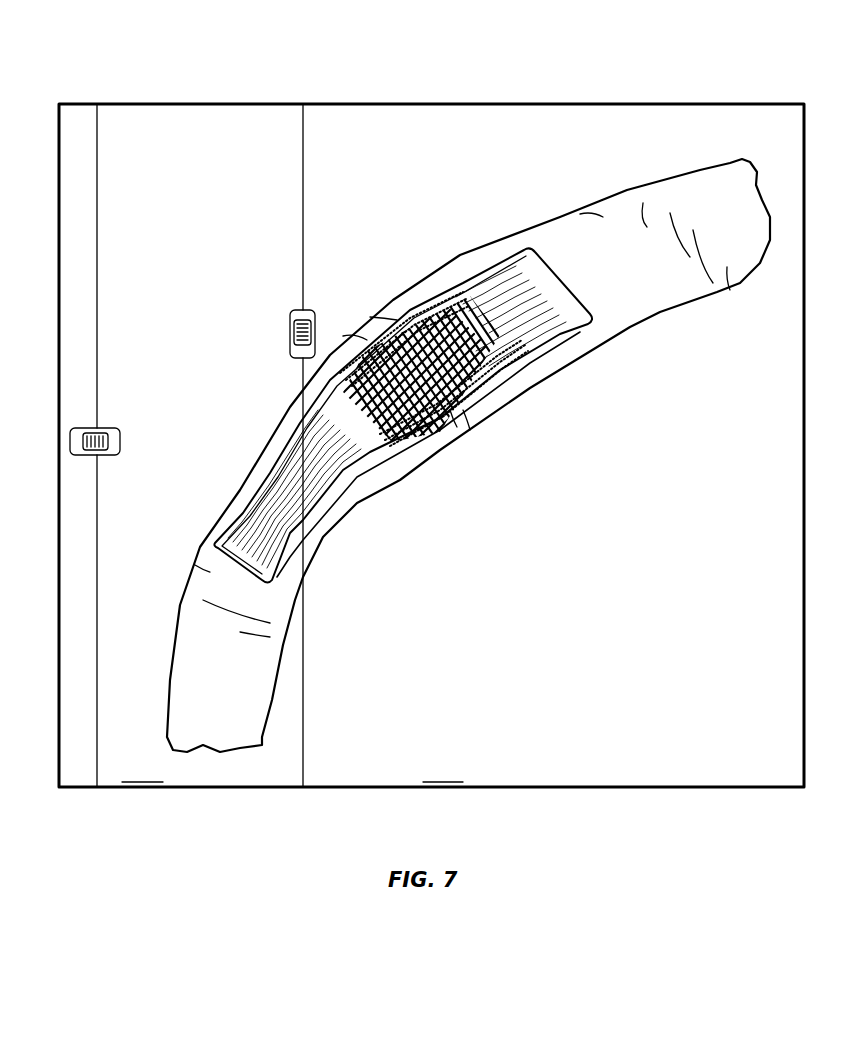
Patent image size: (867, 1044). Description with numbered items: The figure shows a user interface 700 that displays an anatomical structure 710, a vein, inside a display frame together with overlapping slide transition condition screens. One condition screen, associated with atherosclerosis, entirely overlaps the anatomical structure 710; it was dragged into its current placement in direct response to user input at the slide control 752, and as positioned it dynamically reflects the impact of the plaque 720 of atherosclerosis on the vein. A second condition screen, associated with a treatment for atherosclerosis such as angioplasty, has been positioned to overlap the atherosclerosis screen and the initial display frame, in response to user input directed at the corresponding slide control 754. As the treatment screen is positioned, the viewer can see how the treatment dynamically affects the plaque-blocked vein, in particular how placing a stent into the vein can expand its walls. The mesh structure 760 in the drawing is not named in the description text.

The user interface 700 is at (221, 56).
The anatomical structure 710 is at (602, 182).
The plaque 720 is at (407, 317).
The slide control 752 is at (120, 437).
The slide control 754 is at (290, 313).
The mesh stent 760 is at (487, 330).